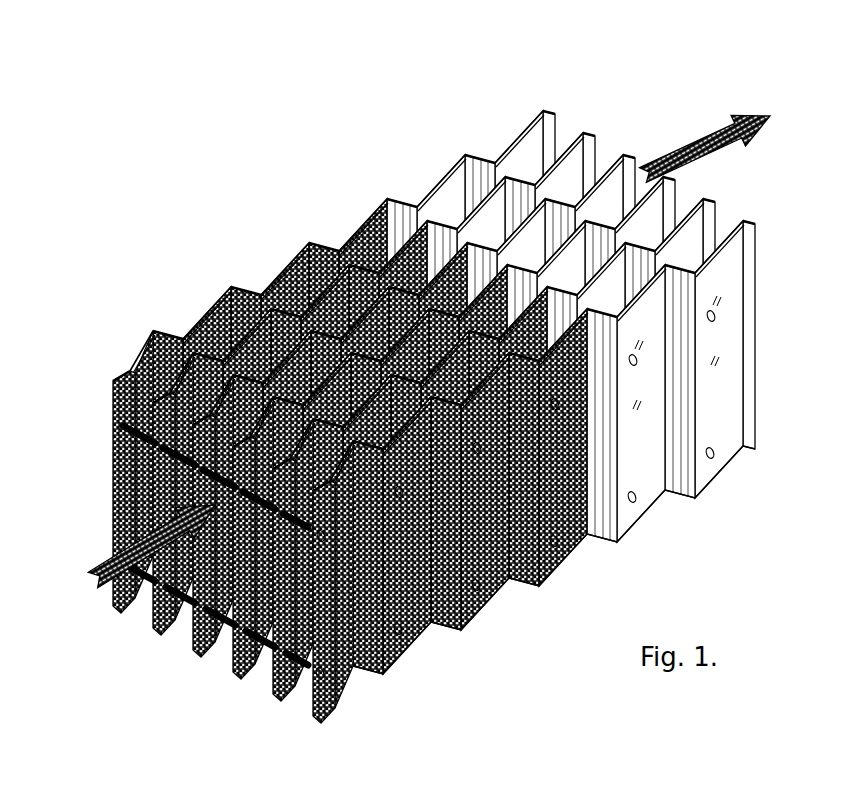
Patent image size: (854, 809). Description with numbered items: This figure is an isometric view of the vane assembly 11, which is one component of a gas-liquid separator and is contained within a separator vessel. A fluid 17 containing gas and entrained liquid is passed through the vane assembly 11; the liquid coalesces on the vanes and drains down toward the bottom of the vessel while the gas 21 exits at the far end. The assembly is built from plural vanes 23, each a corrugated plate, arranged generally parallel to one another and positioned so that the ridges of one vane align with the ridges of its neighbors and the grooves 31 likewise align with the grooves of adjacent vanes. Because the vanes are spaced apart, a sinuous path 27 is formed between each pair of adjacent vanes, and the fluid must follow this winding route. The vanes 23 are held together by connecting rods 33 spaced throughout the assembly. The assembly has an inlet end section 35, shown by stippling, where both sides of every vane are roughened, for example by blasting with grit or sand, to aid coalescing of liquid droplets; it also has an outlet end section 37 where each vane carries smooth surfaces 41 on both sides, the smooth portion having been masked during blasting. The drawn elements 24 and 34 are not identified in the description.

The vane assembly 11 is at (204, 224).
The fluid 17 is at (99, 550).
The gas 21 is at (748, 126).
The vanes 23 is at (545, 100).
The plate bottom edge 24 is at (417, 607).
The sinuous path 27 is at (403, 217).
The grooves 31 is at (340, 654).
The connecting rods 33 is at (122, 431).
The front fin 34 is at (117, 494).
The inlet end section 35 is at (158, 325).
The outlet end section 37 is at (447, 227).
The smooth surfaces 41 is at (627, 457).